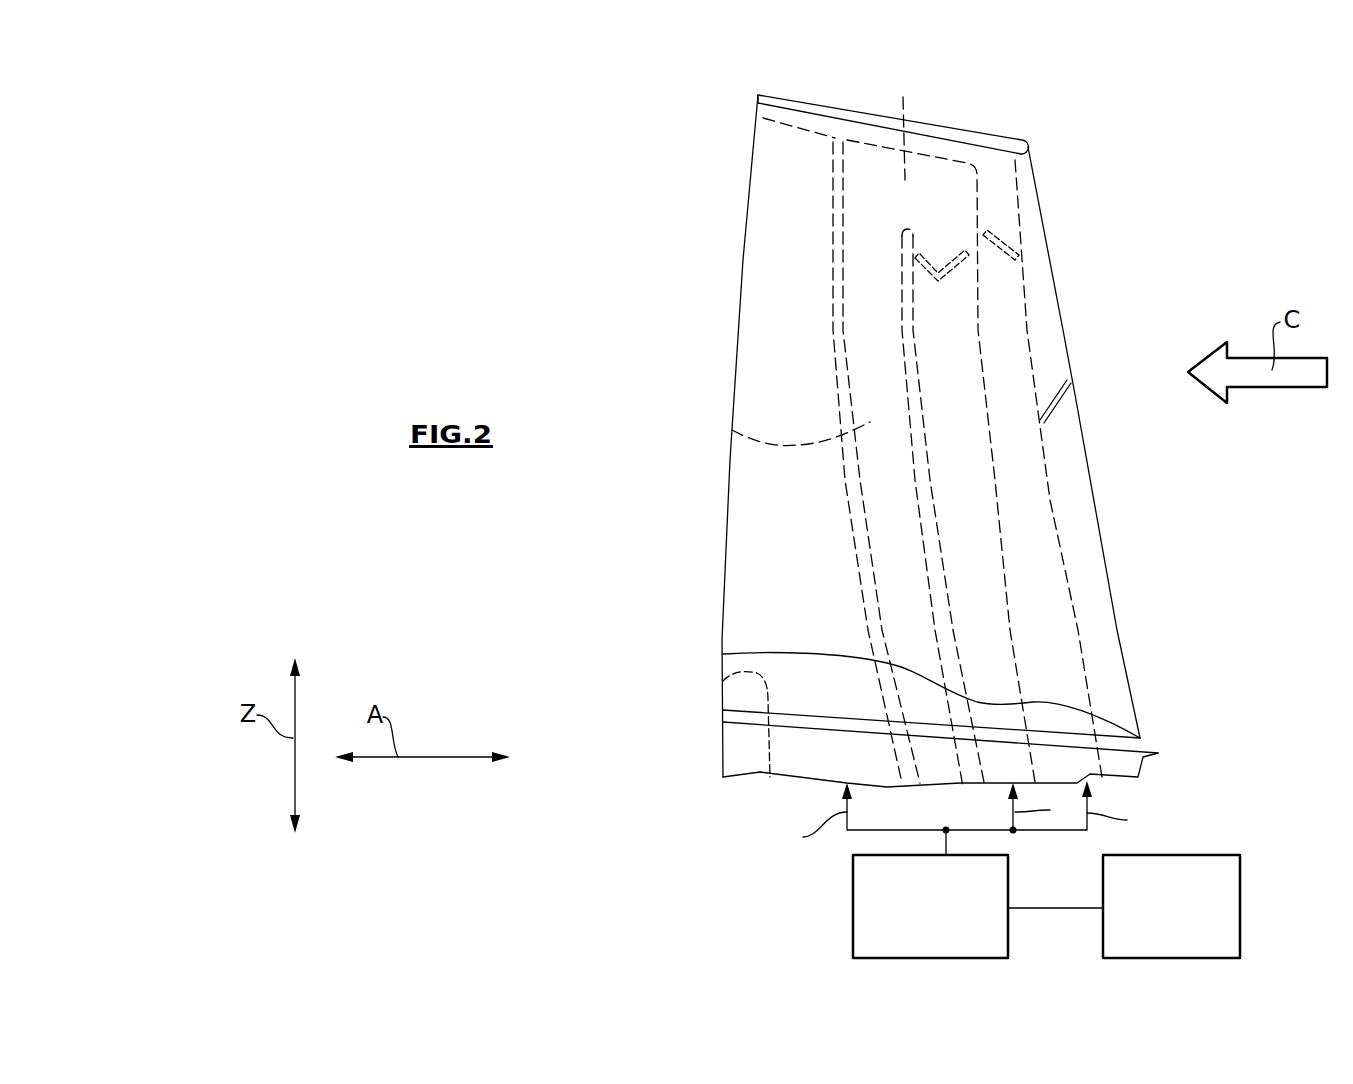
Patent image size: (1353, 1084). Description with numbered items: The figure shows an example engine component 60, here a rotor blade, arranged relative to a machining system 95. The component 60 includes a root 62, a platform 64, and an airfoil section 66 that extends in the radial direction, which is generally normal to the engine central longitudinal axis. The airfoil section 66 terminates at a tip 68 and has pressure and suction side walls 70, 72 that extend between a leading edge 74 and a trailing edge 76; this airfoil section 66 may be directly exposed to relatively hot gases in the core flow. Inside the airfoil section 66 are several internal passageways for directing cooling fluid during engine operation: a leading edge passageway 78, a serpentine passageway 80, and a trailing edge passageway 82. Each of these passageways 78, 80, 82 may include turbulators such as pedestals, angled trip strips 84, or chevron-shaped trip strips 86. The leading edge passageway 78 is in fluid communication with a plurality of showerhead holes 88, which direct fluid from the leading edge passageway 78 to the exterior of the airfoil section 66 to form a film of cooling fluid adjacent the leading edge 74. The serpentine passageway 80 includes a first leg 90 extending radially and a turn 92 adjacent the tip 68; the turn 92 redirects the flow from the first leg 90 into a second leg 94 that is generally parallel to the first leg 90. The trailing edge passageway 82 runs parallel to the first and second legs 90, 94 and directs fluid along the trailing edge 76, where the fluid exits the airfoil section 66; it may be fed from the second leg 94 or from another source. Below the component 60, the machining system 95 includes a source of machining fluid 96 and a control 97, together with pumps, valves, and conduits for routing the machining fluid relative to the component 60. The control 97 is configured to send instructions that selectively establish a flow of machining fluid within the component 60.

The engine component 60 is at (1167, 271).
The root 62 is at (1195, 762).
The platform 64 is at (737, 700).
The airfoil section 66 is at (1102, 453).
The tip 68 is at (863, 110).
The pressure side wall 70 is at (828, 127).
The suction side wall 72 is at (988, 128).
The leading edge 74 is at (1058, 262).
The trailing edge 76 is at (737, 305).
The leading edge passageway 78 is at (1085, 660).
The serpentine passageway 80 is at (1016, 552).
The trailing edge passageway 82 is at (723, 681).
The angled trip strips 84 is at (1003, 247).
The chevron-shaped trip strips 86 is at (953, 255).
The showerhead holes 88 is at (1070, 410).
The first leg 90 is at (977, 540).
The turn 92 is at (903, 100).
The second leg 94 is at (732, 430).
The machining system 95 is at (757, 862).
The source of machining fluid 96 is at (853, 915).
The control 97 is at (1217, 855).